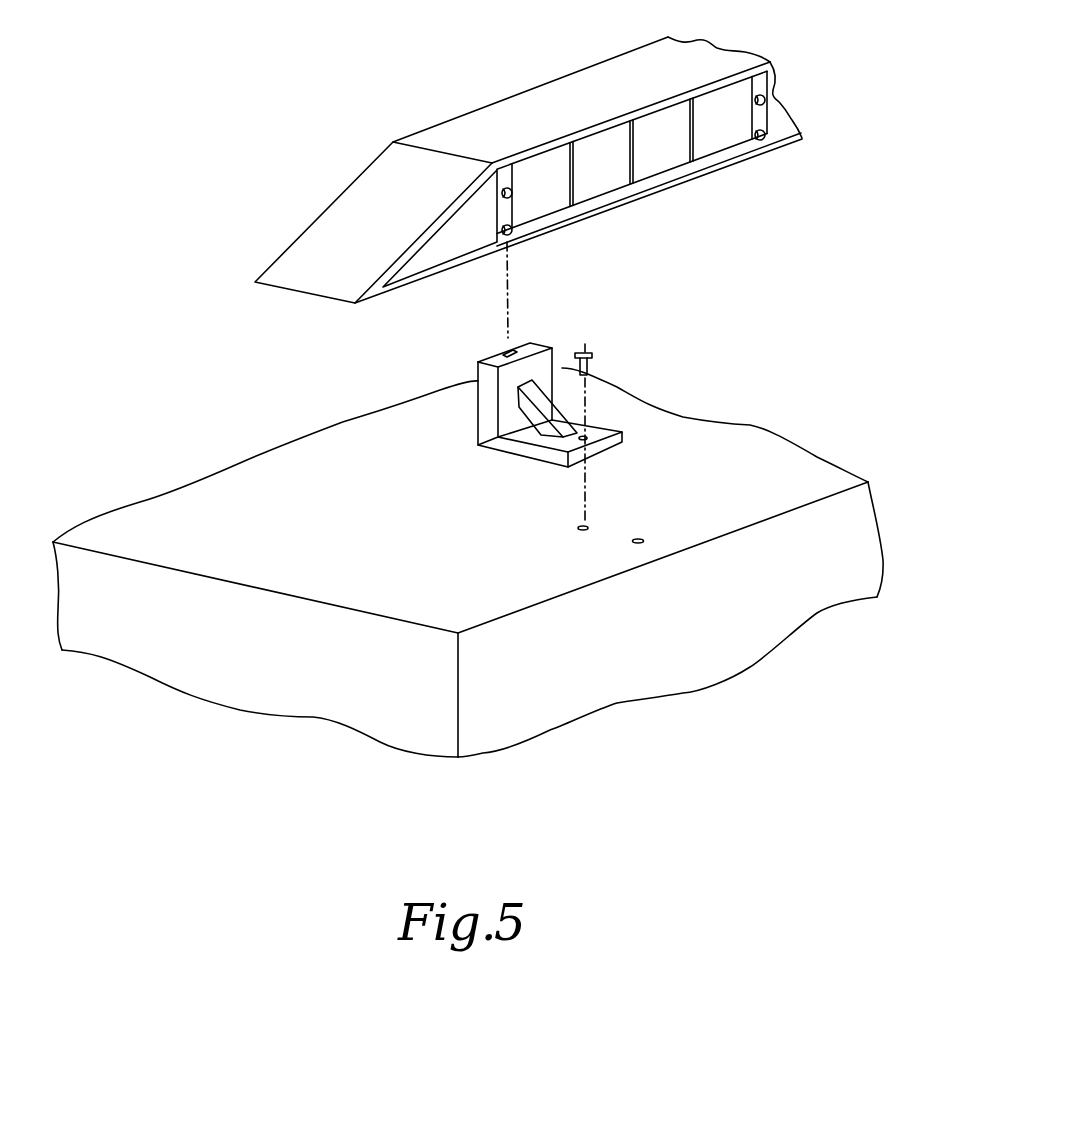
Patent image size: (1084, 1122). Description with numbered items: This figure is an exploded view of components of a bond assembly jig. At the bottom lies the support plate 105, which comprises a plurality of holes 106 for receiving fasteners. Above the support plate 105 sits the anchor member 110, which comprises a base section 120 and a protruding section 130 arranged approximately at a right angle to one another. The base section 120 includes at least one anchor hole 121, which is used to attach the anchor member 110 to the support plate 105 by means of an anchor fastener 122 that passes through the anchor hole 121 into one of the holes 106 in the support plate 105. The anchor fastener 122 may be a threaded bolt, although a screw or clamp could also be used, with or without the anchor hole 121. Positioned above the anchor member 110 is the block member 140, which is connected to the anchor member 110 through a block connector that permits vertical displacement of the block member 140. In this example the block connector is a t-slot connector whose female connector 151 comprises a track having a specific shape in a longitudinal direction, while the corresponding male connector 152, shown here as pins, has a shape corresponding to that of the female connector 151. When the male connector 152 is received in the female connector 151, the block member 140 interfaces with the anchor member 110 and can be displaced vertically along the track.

The support plate 105 is at (423, 568).
The holes 106 is at (638, 543).
The anchor member 110 is at (488, 389).
The base section 120 is at (530, 452).
The anchor hole 121 is at (620, 440).
The anchor fastener 122 is at (592, 353).
The protruding section 130 is at (540, 367).
The block member 140 is at (358, 202).
The female connector 151 is at (505, 353).
The male connector 152 is at (512, 192).